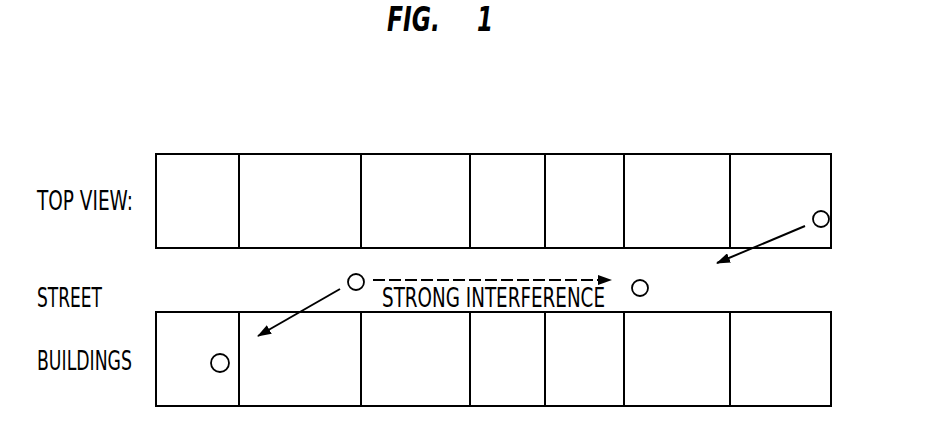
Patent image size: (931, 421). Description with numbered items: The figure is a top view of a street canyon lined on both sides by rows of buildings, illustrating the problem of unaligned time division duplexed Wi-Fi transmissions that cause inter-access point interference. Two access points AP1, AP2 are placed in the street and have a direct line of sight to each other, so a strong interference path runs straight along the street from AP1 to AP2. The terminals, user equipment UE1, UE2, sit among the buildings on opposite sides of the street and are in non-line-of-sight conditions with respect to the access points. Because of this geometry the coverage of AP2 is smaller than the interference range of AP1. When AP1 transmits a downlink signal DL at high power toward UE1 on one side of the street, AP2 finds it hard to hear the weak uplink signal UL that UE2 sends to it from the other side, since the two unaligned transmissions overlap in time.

The user equipment UE1 is at (203, 350).
The user equipment UE2 is at (802, 206).
The access point AP1 is at (375, 269).
The access point AP2 is at (661, 275).
The downlink signal DL is at (298, 301).
The uplink signal UL is at (761, 261).